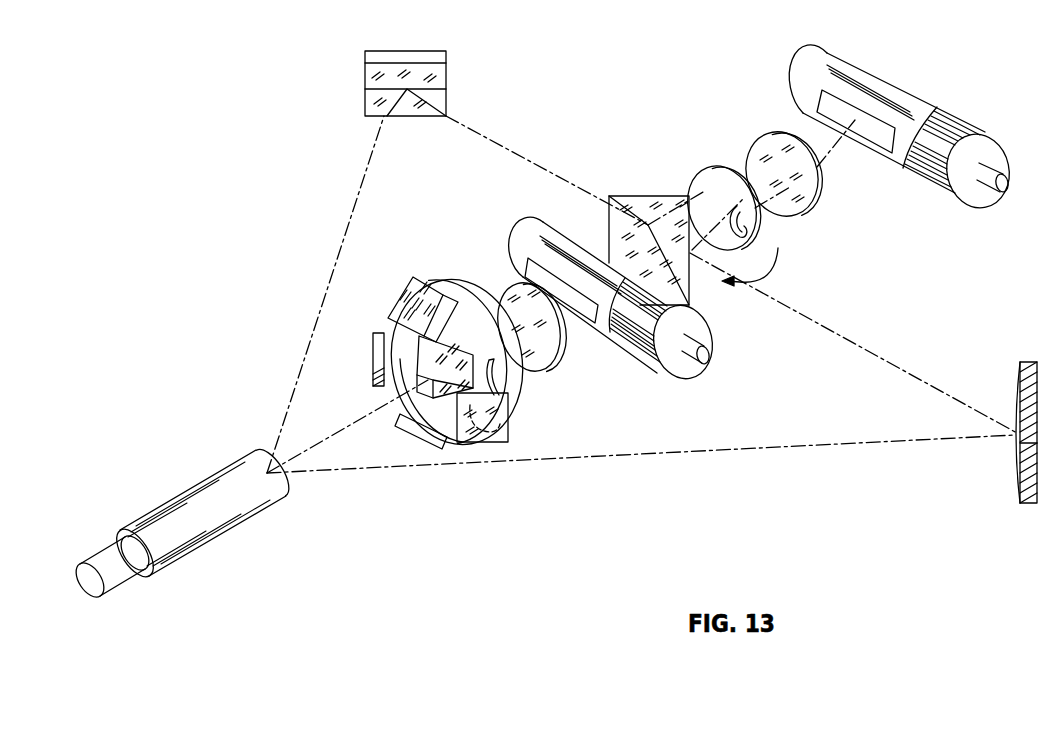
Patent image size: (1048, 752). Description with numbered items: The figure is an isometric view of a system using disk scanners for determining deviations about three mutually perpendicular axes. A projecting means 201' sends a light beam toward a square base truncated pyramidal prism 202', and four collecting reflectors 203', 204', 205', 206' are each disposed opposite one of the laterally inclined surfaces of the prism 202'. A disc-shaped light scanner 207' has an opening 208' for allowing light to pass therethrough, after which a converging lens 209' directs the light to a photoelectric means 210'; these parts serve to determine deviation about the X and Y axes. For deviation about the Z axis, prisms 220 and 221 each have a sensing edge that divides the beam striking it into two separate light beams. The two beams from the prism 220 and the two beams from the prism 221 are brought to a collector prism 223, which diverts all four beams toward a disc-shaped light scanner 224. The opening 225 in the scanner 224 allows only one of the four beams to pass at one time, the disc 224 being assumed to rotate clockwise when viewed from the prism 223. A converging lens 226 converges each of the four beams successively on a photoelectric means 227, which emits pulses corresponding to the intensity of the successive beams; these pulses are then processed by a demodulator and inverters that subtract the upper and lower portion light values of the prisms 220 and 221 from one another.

The projecting means 201' is at (179, 525).
The square base truncated pyramidal prism 202' is at (460, 324).
The collecting reflector 203' is at (391, 441).
The collecting reflector 204' is at (531, 417).
The collecting reflector 205' is at (405, 297).
The collecting reflector 206' is at (343, 371).
The disc-shaped light scanner 207' is at (461, 385).
The opening 208' is at (546, 386).
The converging lens 209' is at (551, 330).
The photoelectric means 210' is at (644, 300).
The prism 220 is at (1017, 479).
The prism 221 is at (432, 96).
The collector prism 223 is at (641, 196).
The disc-shaped light scanner 224 is at (726, 172).
The opening 225 is at (732, 232).
The converging lens 226 is at (818, 170).
The photoelectric means 227 is at (912, 107).